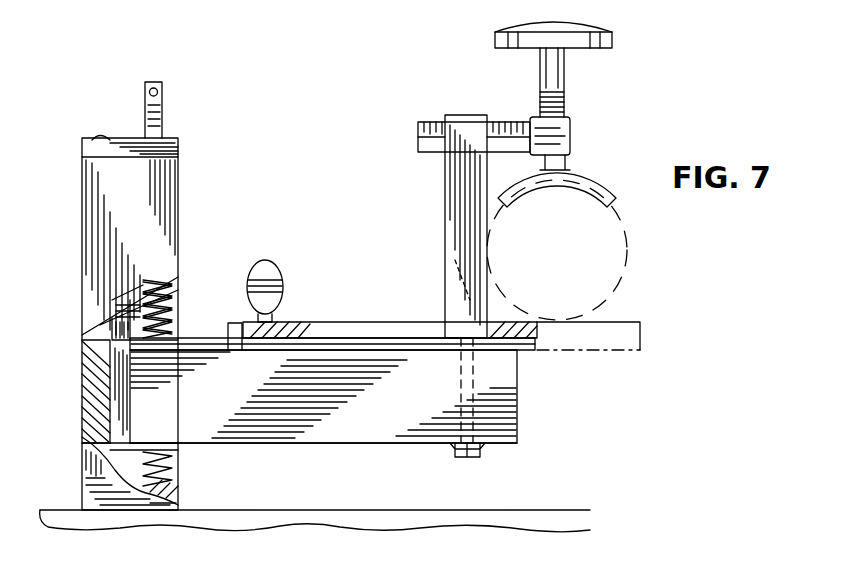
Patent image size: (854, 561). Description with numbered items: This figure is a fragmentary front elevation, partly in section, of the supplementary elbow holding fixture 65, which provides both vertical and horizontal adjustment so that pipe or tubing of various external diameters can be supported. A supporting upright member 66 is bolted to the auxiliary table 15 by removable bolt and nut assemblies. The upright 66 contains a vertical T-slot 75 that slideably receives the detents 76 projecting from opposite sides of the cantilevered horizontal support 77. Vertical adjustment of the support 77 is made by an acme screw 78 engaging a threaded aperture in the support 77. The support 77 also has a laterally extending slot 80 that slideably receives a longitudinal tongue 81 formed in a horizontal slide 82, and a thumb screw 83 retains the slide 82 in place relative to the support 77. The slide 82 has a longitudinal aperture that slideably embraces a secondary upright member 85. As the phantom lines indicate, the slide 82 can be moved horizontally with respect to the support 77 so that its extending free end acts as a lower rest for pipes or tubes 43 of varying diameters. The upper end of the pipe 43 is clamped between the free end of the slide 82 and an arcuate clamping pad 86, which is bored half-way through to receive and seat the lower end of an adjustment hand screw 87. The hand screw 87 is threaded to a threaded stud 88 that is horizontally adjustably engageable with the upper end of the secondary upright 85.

The auxiliary table 15 is at (392, 527).
The pipe or tube 43 is at (615, 283).
The supplementary elbow holding fixture 65 is at (395, 270).
The supporting upright member 66 is at (82, 258).
The vertical T-slot 75 is at (115, 325).
The detents 76 is at (118, 358).
The cantilevered horizontal support 77 is at (332, 432).
The acme screw 78 is at (165, 300).
The laterally extending slot 80 is at (272, 343).
The longitudinal tongue 81 is at (510, 370).
The horizontal slide 82 is at (275, 330).
The thumb screw 83 is at (268, 268).
The secondary upright member 85 is at (445, 210).
The arcuate clamping pad 86 is at (585, 173).
The adjustment hand screw 87 is at (563, 88).
The threaded stud 88 is at (570, 130).